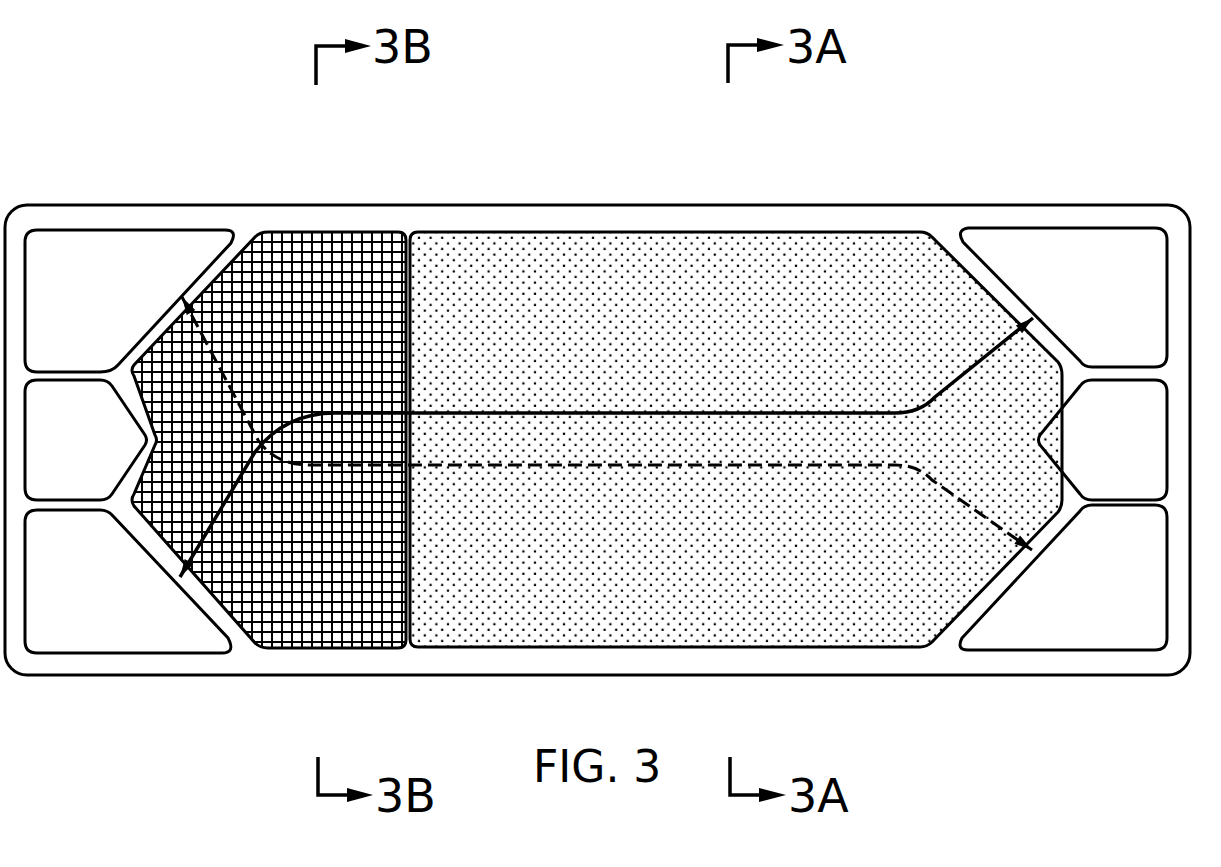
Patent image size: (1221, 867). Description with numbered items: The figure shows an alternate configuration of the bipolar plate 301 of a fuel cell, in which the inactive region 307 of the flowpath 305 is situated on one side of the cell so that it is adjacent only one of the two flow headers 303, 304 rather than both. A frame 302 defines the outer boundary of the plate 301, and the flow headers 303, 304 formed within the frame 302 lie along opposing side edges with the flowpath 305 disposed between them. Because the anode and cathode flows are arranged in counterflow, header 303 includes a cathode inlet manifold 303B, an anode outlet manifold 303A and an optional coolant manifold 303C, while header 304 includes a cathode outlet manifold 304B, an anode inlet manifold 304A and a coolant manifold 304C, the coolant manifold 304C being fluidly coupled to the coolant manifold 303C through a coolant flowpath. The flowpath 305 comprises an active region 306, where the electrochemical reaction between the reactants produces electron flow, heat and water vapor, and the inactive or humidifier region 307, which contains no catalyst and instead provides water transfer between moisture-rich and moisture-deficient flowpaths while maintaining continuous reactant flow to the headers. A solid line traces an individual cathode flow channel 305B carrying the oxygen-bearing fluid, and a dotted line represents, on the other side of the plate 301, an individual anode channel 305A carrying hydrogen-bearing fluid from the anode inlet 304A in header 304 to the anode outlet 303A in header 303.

The bipolar plate 301 is at (440, 153).
The frame 302 is at (282, 666).
The flow header 303 is at (250, 188).
The anode outlet manifold 303A is at (133, 315).
The cathode inlet manifold 303B is at (133, 615).
The coolant manifold 303C is at (115, 461).
The flow header 304 is at (1170, 188).
The anode inlet manifold 304A is at (1130, 612).
The cathode outlet manifold 304B is at (1130, 315).
The coolant manifold 304C is at (1150, 461).
The flowpath 305 is at (940, 188).
The anode flow channel 305A is at (608, 467).
The cathode flow channel 305B is at (558, 386).
The active region 306 is at (837, 640).
The inactive region 307 is at (362, 648).